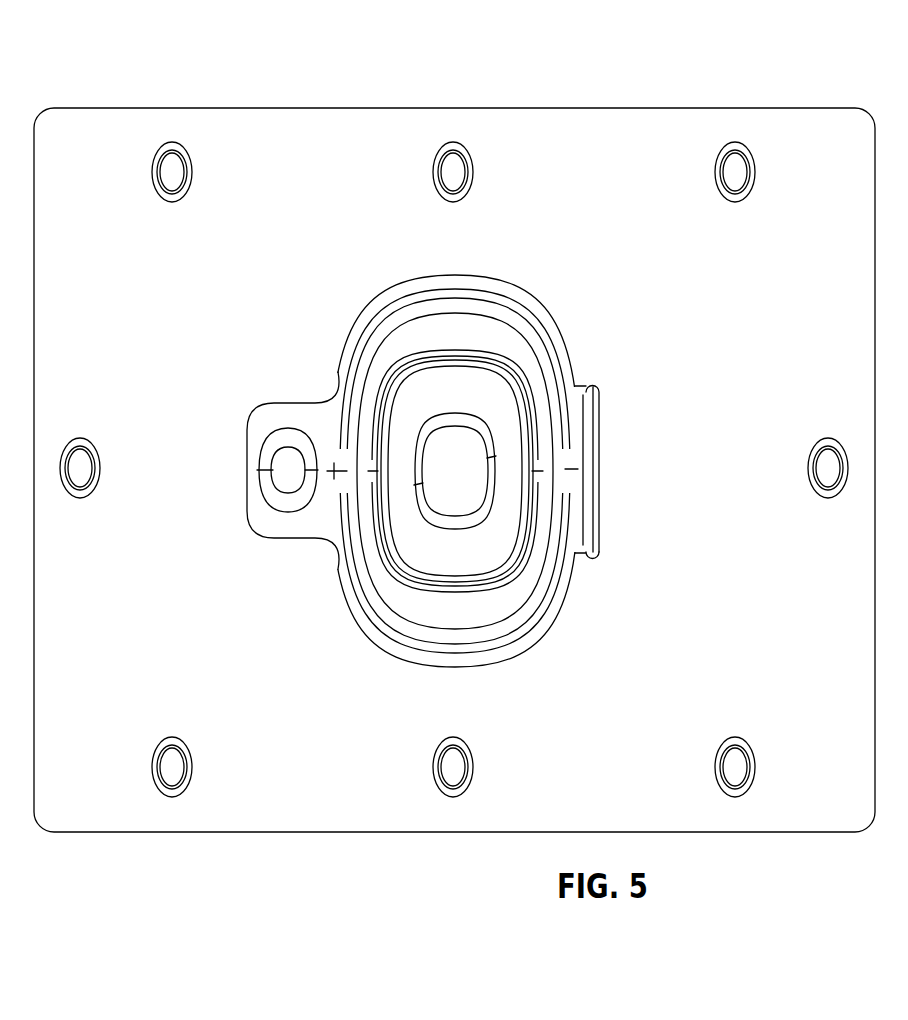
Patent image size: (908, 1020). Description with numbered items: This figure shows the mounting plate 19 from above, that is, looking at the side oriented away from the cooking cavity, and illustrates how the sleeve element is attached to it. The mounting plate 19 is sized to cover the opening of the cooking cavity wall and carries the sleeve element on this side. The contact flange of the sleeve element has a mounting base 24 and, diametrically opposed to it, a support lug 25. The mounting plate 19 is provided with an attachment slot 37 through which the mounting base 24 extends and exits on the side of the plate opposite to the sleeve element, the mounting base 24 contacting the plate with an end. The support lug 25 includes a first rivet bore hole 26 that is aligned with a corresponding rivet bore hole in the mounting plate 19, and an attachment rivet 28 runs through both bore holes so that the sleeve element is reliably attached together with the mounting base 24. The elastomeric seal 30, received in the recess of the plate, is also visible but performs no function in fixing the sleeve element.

The mounting plate 19 is at (772, 337).
The mounting base 24 is at (593, 448).
The support lug 25 is at (297, 382).
The first rivet bore hole 26 is at (287, 523).
The attachment rivet 28 is at (280, 450).
The elastomeric material seal 30 is at (473, 540).
The attachment slot 37 is at (597, 565).